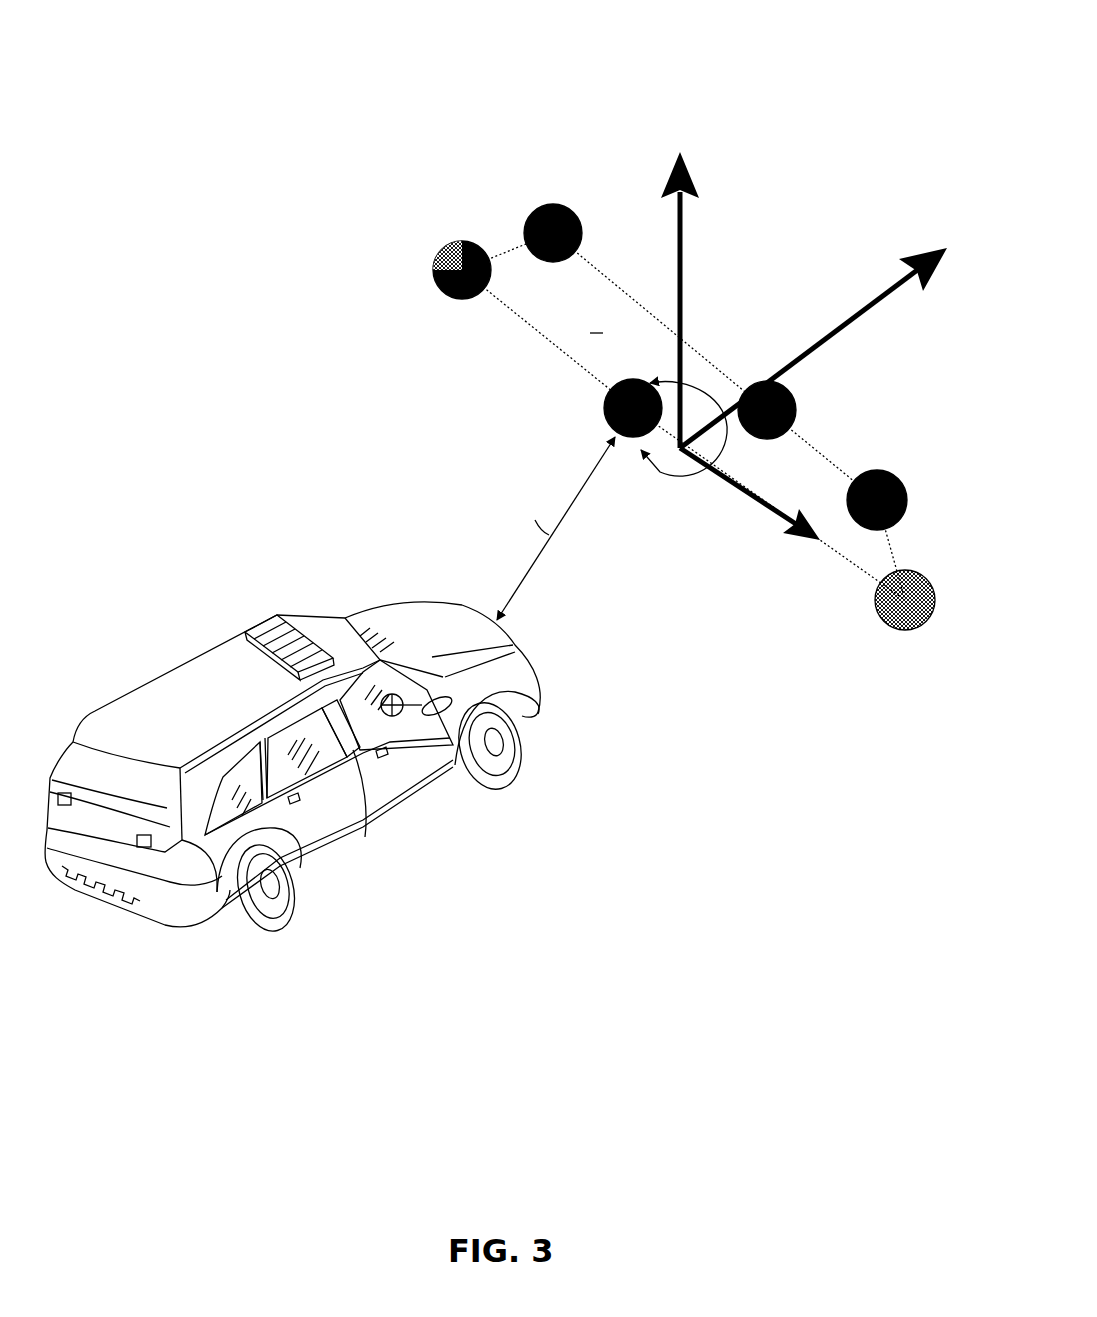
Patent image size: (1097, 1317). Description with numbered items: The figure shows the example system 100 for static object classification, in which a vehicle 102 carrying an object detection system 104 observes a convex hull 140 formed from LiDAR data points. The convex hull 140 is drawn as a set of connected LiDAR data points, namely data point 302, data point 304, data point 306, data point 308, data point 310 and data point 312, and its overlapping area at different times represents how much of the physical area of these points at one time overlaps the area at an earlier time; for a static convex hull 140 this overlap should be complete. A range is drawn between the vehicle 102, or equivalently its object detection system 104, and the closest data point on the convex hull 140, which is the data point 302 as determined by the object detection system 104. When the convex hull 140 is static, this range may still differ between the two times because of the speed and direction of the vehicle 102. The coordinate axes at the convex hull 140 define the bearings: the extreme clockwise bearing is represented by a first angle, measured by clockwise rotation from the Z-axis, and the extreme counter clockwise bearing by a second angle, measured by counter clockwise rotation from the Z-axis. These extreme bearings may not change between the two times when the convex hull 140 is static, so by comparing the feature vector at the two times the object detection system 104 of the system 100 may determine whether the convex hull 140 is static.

The system 100 is at (872, 22).
The vehicle 102 is at (113, 698).
The object detection system 104 is at (276, 613).
The convex hull 140 is at (428, 182).
The data point 302 is at (606, 411).
The data point 304 is at (434, 279).
The data point 306 is at (530, 216).
The data point 308 is at (761, 382).
The data point 310 is at (877, 470).
The data point 312 is at (930, 573).